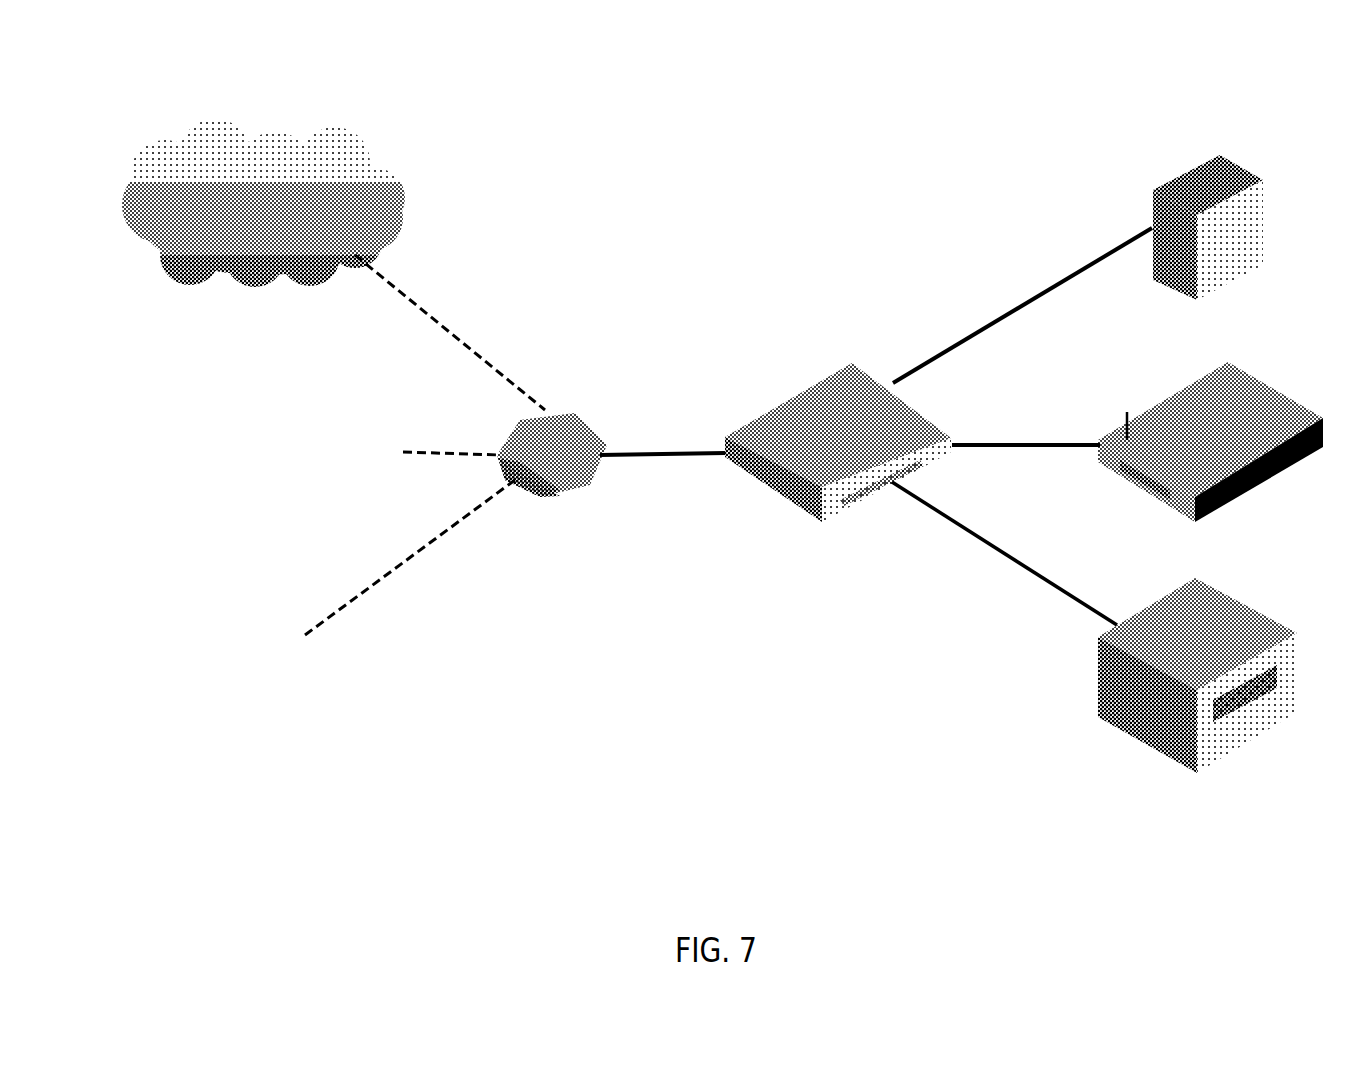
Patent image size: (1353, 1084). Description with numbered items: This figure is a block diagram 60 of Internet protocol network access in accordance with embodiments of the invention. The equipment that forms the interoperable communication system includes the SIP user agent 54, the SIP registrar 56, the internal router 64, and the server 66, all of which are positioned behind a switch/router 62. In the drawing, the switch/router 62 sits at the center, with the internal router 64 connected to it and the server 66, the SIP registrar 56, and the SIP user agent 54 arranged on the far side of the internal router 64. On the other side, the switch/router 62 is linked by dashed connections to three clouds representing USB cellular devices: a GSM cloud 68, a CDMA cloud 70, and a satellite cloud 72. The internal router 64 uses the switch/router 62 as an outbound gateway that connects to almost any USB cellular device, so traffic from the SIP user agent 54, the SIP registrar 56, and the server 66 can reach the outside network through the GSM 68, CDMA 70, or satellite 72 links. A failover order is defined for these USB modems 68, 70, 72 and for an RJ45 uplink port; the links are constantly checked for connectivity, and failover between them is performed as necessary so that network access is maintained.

The block diagram 60 is at (1298, 61).
The switch/router 62 is at (570, 418).
The internal router 64 is at (797, 397).
The server 66 is at (1210, 160).
The SIP registrar 56 is at (1242, 378).
The SIP user agent 54 is at (1247, 607).
The GSM cloud 68 is at (172, 150).
The CDMA cloud 70 is at (155, 397).
The satellite cloud 72 is at (145, 652).